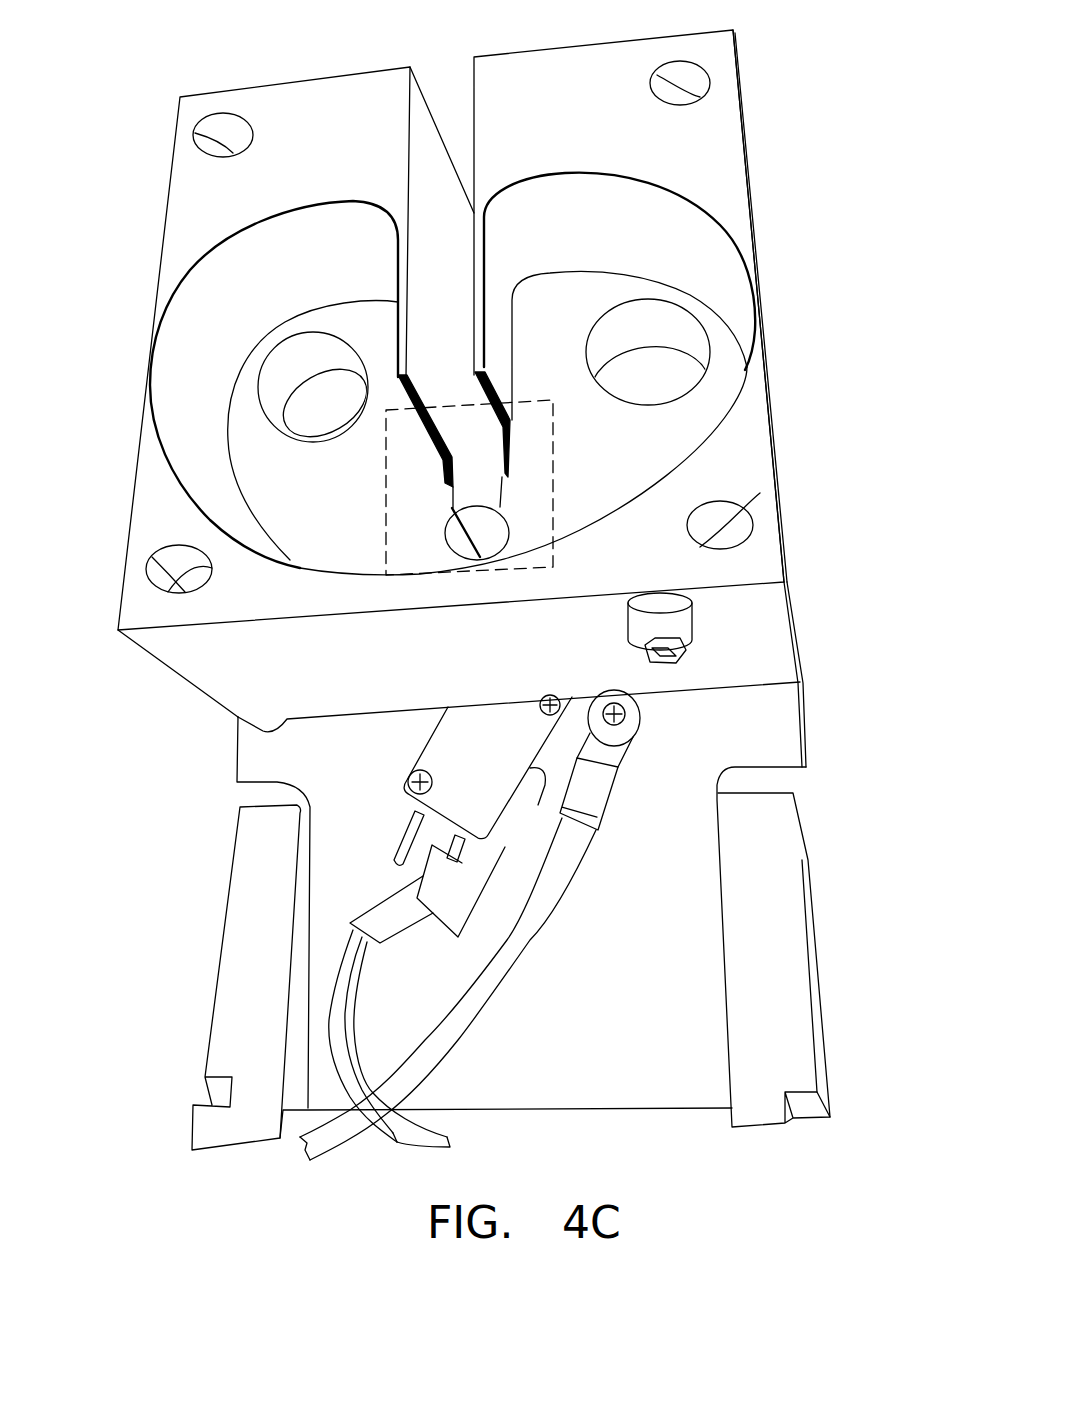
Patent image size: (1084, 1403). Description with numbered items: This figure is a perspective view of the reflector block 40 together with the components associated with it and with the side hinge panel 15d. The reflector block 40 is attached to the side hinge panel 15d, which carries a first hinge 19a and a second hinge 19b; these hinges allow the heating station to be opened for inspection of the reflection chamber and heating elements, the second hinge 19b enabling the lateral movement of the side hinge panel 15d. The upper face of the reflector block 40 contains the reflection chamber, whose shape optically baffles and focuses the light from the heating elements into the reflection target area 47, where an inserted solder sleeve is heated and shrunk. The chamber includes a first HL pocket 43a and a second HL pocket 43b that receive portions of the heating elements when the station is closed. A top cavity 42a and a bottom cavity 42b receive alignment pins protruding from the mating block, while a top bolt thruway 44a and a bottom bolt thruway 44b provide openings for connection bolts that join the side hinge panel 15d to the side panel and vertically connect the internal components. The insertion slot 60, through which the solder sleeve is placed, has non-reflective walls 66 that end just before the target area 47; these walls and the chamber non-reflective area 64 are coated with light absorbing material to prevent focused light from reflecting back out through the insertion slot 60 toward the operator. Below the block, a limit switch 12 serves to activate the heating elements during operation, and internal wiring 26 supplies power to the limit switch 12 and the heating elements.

The insertion slot 60 is at (450, 62).
The reflector block 40 is at (750, 190).
The non-reflective walls 66 is at (425, 170).
The top bolt thruway 44a is at (195, 133).
The bottom bolt thruway 44b is at (760, 493).
The top cavity 42a is at (700, 97).
The bottom cavity 42b is at (152, 557).
The first HL pocket 43a is at (270, 415).
The second HL pocket 43b is at (673, 373).
The reflection target area 47 is at (386, 490).
The chamber non-reflective area 64 is at (480, 547).
The side hinge panel 15d is at (771, 733).
The first hinge 19a is at (242, 1005).
The second hinge 19b is at (775, 918).
The limit switch 12 is at (433, 753).
The internal wiring 26 is at (345, 963).